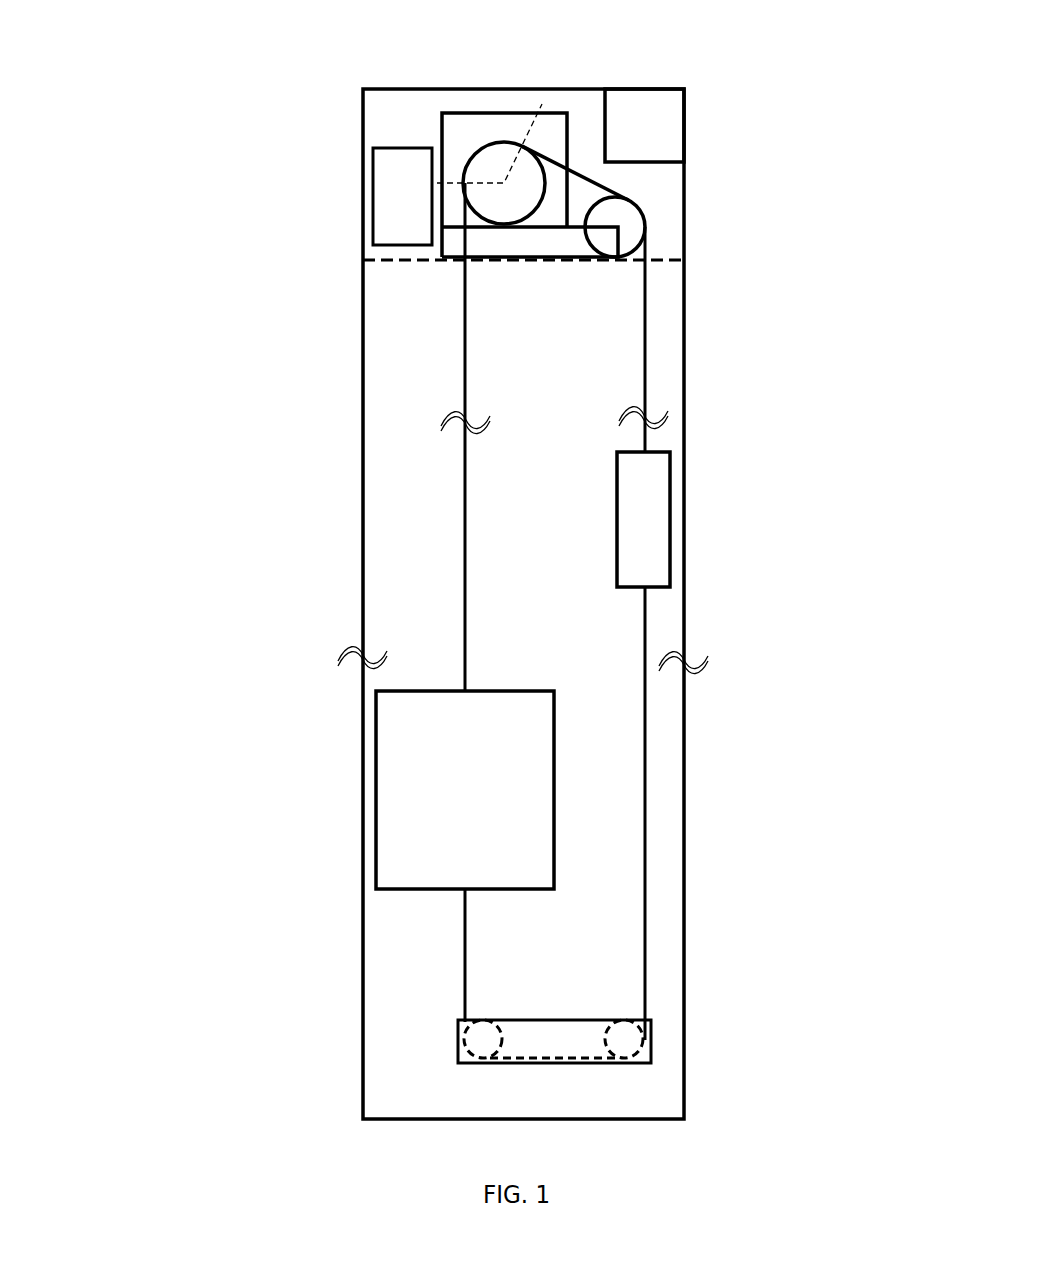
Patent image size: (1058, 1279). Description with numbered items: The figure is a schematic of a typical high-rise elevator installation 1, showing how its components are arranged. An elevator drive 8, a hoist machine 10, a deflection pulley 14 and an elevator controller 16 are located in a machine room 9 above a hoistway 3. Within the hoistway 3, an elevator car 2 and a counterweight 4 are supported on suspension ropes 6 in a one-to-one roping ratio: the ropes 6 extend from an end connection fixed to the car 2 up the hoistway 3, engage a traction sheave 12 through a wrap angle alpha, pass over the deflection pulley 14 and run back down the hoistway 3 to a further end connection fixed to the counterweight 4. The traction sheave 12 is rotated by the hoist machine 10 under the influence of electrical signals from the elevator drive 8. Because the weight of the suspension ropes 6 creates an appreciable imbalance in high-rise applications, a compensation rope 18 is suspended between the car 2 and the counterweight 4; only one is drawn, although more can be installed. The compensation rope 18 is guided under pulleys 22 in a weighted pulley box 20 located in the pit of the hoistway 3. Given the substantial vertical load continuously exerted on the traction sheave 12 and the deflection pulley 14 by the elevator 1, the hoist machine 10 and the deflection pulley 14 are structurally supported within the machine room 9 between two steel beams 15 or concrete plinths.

The elevator installation 1 is at (755, 863).
The elevator car 2 is at (458, 801).
The hoistway 3 is at (510, 536).
The counterweight 4 is at (636, 530).
The suspension ropes 6 is at (645, 330).
The elevator drive 8 is at (377, 207).
The machine room 9 is at (395, 109).
The hoist machine 10 is at (460, 143).
The traction sheave 12 is at (524, 182).
The deflection pulley 14 is at (640, 207).
The steel beams 15 is at (600, 245).
The elevator controller 16 is at (634, 135).
The compensation rope 18 is at (645, 828).
The weighted pulley box 20 is at (448, 1033).
The pulleys 22 is at (484, 1041).